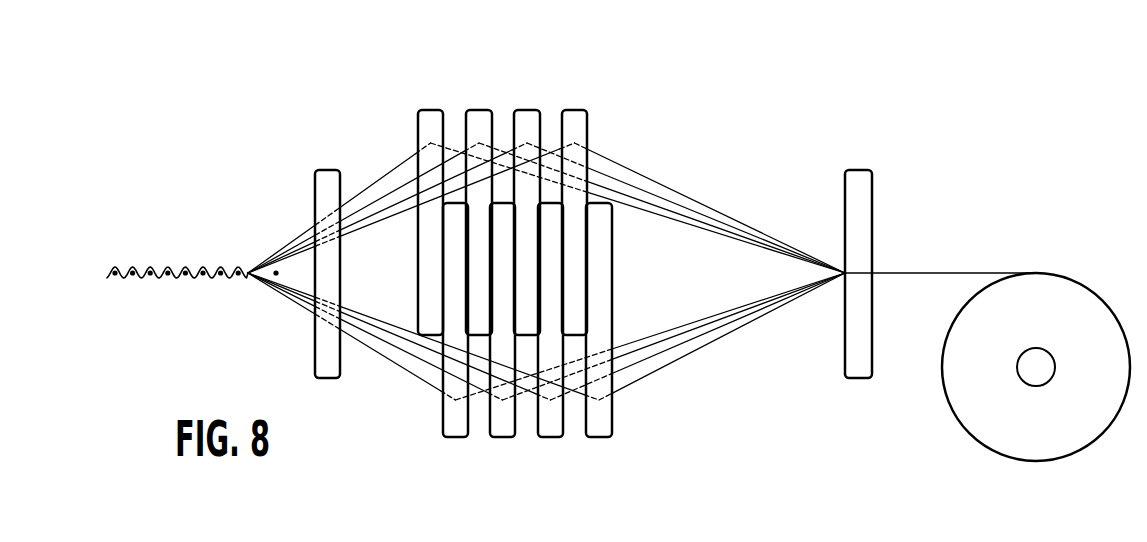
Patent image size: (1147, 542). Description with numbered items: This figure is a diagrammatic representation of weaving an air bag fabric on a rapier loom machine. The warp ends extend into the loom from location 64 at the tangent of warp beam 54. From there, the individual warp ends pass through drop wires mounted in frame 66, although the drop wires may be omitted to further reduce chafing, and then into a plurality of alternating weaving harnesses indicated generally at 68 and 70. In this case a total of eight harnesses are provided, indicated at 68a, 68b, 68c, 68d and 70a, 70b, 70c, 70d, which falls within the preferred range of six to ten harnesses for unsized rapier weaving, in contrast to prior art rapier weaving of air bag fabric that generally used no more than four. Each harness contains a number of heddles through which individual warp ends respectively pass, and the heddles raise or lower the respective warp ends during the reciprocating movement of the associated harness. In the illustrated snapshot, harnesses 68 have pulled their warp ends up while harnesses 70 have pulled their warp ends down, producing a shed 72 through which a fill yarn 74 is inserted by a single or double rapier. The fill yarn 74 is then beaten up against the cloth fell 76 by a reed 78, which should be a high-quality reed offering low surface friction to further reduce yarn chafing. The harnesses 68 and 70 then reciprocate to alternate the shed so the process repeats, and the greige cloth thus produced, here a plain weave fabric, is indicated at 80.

The warp beam 54 is at (947, 397).
The location 64 is at (1036, 273).
The frame 66 is at (858, 170).
The weaving harnesses 68 is at (540, 193).
The weaving harness 68a is at (433, 108).
The weaving harness 68b is at (477, 108).
The weaving harness 68c is at (527, 108).
The weaving harness 68d is at (573, 108).
The weaving harnesses 70 is at (568, 349).
The weaving harness 70a is at (455, 440).
The weaving harness 70b is at (502, 440).
The weaving harness 70c is at (552, 440).
The weaving harness 70d is at (600, 440).
The shed 72 is at (291, 284).
The fill yarn 74 is at (276, 270).
The cloth fell 76 is at (247, 278).
The reed 78 is at (330, 170).
The greige cloth 80 is at (171, 264).